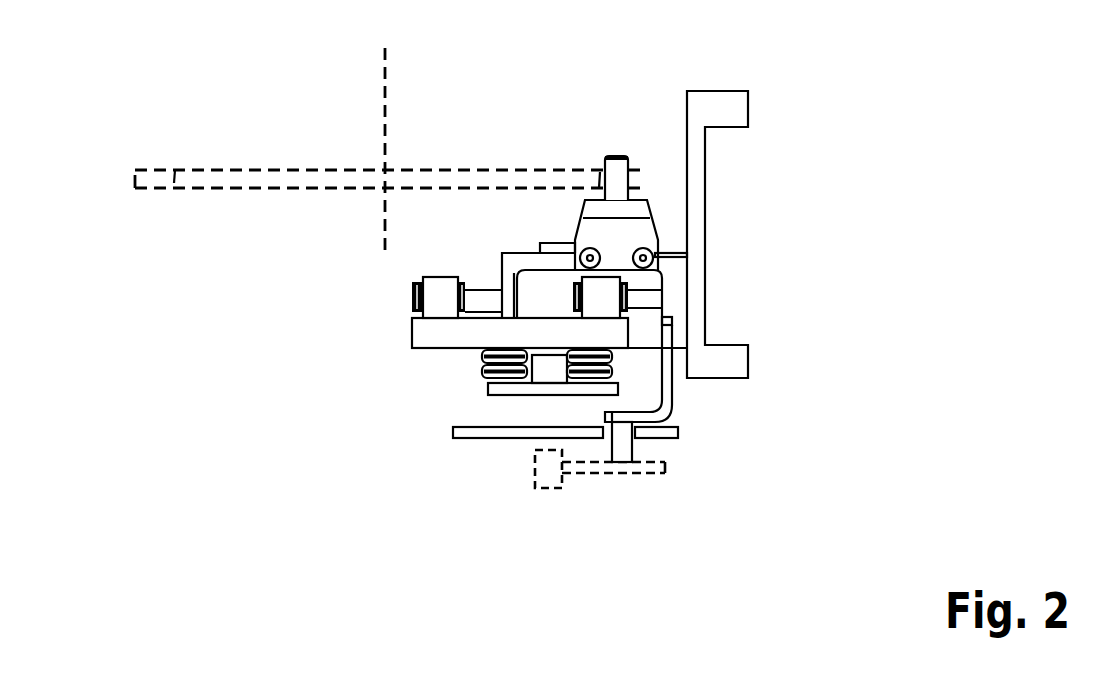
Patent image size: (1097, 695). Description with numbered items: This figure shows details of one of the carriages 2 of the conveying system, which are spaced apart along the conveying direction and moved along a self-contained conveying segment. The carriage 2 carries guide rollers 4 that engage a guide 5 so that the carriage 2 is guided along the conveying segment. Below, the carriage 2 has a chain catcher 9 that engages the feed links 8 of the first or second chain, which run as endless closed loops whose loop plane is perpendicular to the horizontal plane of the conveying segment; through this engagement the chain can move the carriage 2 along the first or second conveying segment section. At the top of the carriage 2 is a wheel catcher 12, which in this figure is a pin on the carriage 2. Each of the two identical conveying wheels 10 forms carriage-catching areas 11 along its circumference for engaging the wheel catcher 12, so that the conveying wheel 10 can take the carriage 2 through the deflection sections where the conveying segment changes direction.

The carriage 2 is at (518, 228).
The guide rollers 4 is at (490, 370).
The guide 5 is at (548, 368).
The feed links 8 is at (635, 473).
The chain catcher 9 is at (618, 450).
The conveying wheel 10 is at (337, 177).
The carriage-catching areas 11 is at (645, 171).
The wheel catcher 12 is at (618, 168).